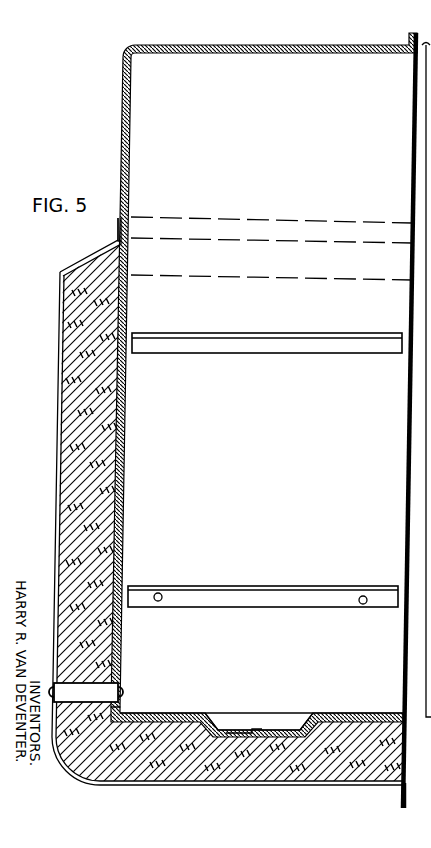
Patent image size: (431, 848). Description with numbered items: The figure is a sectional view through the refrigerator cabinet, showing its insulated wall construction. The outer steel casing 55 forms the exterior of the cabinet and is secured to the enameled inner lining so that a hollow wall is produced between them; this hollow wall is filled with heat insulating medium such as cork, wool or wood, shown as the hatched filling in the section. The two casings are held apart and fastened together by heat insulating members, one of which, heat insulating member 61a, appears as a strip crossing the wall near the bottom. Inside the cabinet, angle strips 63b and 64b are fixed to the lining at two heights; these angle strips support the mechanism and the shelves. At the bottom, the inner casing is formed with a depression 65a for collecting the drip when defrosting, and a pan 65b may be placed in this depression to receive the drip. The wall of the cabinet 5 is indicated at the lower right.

The cabinet wall 5 is at (405, 800).
The outer steel casing 55 is at (62, 492).
The heat insulating member 61a is at (102, 692).
The angle strip 63b is at (255, 349).
The angle strip 64b is at (246, 598).
The depression 65a is at (222, 735).
The pan 65b is at (263, 727).